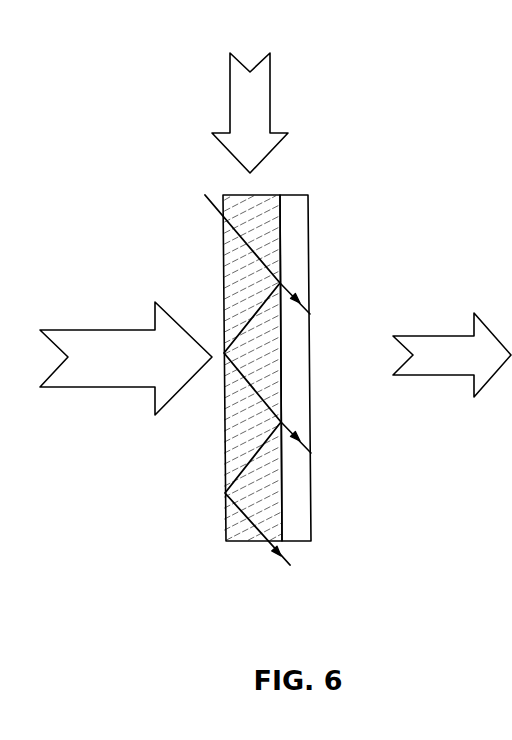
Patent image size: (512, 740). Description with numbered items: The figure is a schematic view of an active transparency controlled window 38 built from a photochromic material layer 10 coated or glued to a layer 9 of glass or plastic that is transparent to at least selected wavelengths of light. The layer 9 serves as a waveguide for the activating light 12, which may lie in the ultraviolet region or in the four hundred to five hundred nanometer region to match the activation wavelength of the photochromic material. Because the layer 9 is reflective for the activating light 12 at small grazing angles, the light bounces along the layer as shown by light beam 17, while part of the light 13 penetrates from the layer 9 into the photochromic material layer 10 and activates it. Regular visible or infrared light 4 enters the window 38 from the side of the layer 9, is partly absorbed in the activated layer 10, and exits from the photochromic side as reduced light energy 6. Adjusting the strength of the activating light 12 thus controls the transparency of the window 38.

The impinging light 4 is at (85, 330).
The reduced light energy 6 is at (418, 336).
The transparent layer 9 is at (247, 542).
The photochromic material layer 10 is at (298, 542).
The activating light 12 is at (270, 80).
The penetrating light 13 is at (310, 314).
The light beam 17 is at (268, 542).
The active transparency controlled window 38 is at (428, 122).